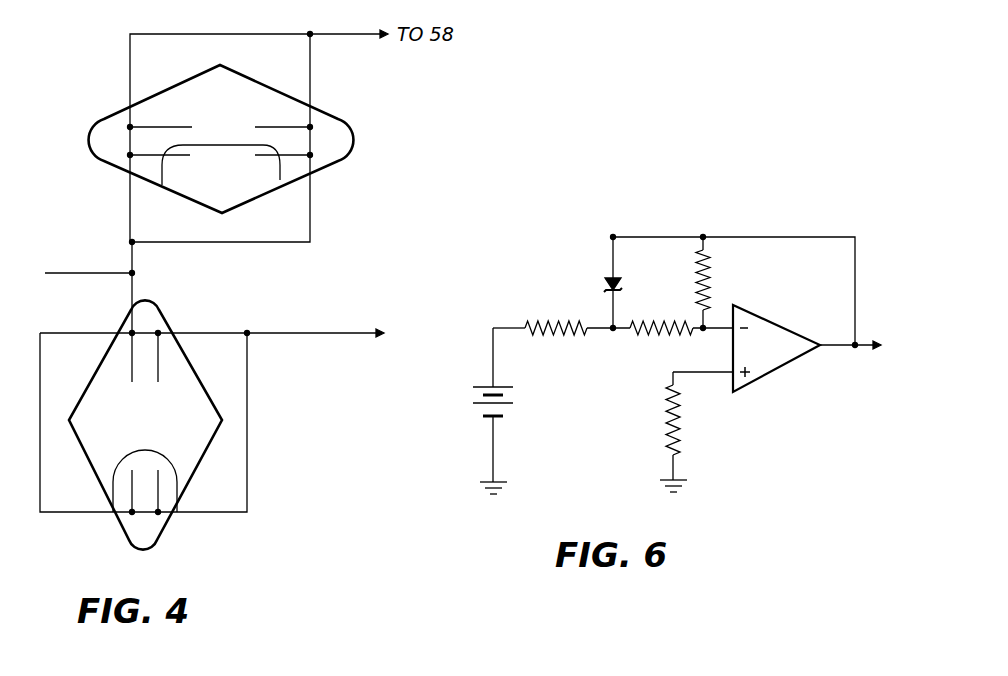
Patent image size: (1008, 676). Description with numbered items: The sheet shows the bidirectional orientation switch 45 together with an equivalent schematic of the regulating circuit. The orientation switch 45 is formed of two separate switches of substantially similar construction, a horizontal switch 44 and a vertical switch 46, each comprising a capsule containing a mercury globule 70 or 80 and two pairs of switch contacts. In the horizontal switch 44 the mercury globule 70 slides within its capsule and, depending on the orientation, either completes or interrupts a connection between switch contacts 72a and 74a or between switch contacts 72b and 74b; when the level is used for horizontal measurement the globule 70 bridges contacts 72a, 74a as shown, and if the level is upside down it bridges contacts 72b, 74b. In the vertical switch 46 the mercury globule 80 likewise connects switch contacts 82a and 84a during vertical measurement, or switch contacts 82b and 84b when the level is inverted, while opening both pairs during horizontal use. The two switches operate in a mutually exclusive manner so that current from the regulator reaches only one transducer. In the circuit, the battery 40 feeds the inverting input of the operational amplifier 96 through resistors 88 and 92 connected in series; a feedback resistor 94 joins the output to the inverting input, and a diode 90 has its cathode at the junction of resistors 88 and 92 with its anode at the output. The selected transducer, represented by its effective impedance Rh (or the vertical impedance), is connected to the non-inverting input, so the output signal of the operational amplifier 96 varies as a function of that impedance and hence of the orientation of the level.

In FIG. 4, the vertical switch 46 is at (328, 166).
In FIG. 4, the switch contact 84a is at (168, 113).
In FIG. 4, the switch contact 84b is at (276, 115).
In FIG. 4, the switch contact 82a is at (155, 155).
In FIG. 4, the switch contact 82b is at (284, 141).
In FIG. 4, the mercury globule 80 is at (230, 143).
In FIG. 4, the bidirectional orientation switch 45 is at (378, 297).
In FIG. 4, the horizontal switch 44 is at (264, 444).
In FIG. 4, the switch contact 72a is at (130, 496).
In FIG. 4, the switch contact 72b is at (130, 382).
In FIG. 4, the switch contact 74a is at (160, 496).
In FIG. 4, the switch contact 74b is at (160, 382).
In FIG. 4, the mercury globule 70 is at (152, 448).
In FIG. 6, the resistor 88 is at (549, 322).
In FIG. 6, the diode 90 is at (606, 283).
In FIG. 6, the resistor 92 is at (670, 324).
In FIG. 6, the feedback resistor 94 is at (712, 284).
In FIG. 6, the battery 40 is at (513, 398).
In FIG. 6, the operational amplifier 96 is at (778, 364).
In FIG. 6, the effective impedance Rh is at (679, 424).